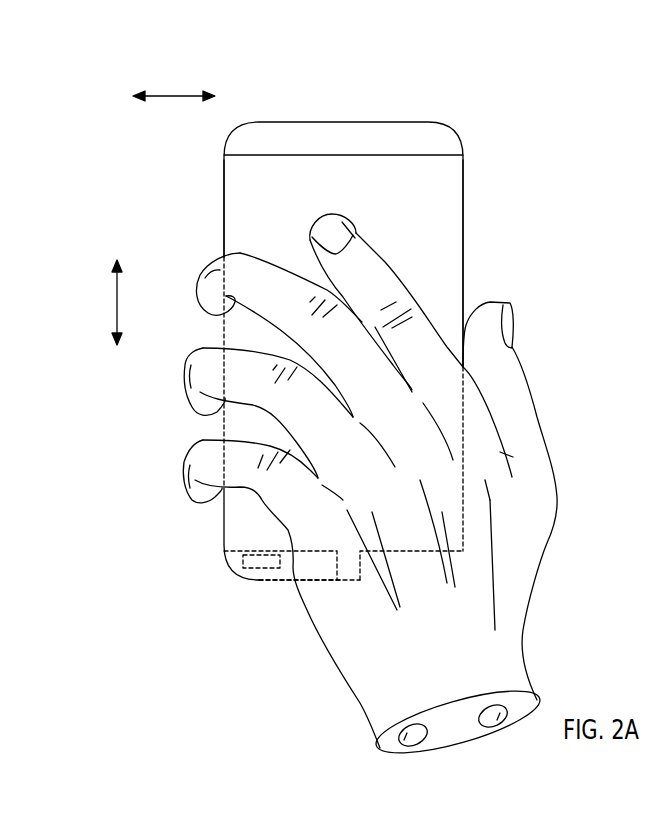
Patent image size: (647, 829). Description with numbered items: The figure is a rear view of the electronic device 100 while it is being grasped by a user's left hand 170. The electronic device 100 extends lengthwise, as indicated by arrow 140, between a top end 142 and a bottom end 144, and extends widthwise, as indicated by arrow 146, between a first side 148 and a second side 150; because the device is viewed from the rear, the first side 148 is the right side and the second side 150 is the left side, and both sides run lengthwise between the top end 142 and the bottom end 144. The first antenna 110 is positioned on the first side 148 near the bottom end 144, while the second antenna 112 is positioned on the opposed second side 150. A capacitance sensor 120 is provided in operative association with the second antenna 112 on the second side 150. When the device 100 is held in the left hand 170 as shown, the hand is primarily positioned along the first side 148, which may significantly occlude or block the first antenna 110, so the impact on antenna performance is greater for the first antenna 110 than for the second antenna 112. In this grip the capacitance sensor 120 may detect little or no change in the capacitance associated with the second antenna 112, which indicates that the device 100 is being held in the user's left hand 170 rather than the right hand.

The electronic device 100 is at (486, 107).
The first antenna 110 is at (418, 570).
The second antenna 112 is at (245, 551).
The capacitance sensor 120 is at (268, 570).
The arrow indicating lengthwise direction 140 is at (116, 298).
The top end 142 is at (366, 122).
The bottom end 144 is at (294, 580).
The arrow indicating widthwise direction 146 is at (178, 95).
The first side 148 is at (463, 210).
The second side 150 is at (224, 209).
The user's left hand 170 is at (524, 479).